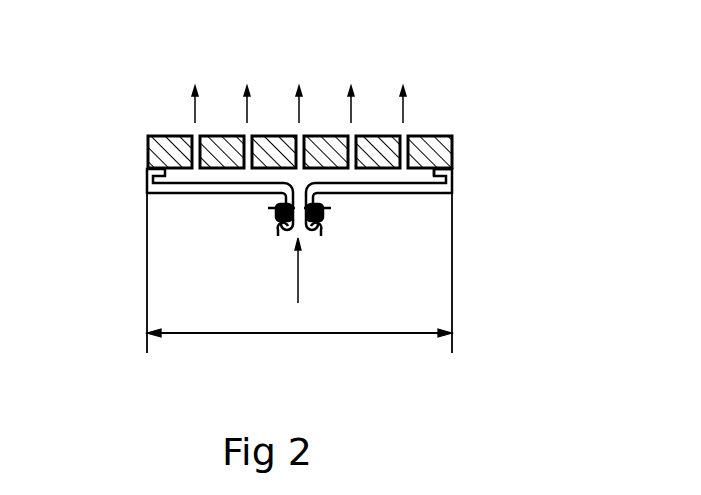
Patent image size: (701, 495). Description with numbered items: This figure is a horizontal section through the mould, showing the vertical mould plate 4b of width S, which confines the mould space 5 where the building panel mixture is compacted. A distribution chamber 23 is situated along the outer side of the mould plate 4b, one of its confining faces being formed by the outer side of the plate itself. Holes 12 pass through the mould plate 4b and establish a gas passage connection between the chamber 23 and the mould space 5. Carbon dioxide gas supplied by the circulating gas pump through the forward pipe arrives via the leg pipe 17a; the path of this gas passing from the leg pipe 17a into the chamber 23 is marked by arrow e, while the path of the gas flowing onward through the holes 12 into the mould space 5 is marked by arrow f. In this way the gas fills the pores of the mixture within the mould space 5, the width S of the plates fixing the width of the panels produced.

The holes 12 is at (242, 135).
The arrow f is at (403, 99).
The mould space 5 is at (324, 108).
The distribution chamber 23 is at (418, 178).
The mould plate 4b is at (457, 137).
The leg pipe 17a is at (312, 233).
The arrow e is at (297, 298).
The width s S is at (222, 332).